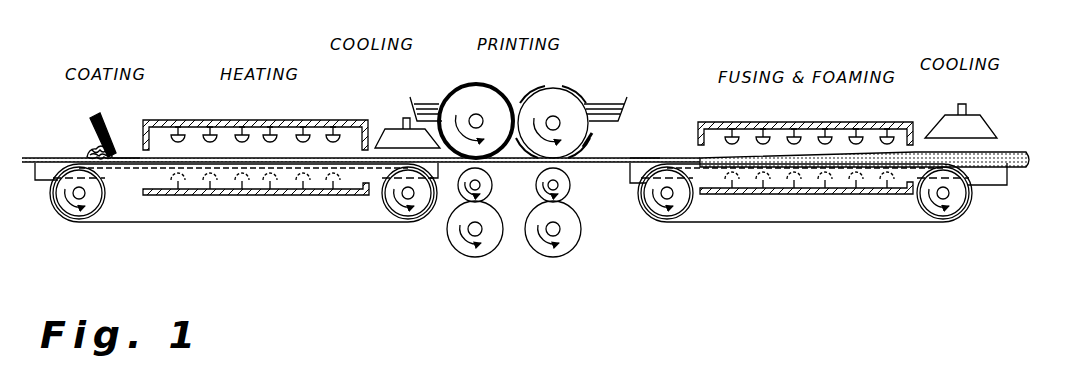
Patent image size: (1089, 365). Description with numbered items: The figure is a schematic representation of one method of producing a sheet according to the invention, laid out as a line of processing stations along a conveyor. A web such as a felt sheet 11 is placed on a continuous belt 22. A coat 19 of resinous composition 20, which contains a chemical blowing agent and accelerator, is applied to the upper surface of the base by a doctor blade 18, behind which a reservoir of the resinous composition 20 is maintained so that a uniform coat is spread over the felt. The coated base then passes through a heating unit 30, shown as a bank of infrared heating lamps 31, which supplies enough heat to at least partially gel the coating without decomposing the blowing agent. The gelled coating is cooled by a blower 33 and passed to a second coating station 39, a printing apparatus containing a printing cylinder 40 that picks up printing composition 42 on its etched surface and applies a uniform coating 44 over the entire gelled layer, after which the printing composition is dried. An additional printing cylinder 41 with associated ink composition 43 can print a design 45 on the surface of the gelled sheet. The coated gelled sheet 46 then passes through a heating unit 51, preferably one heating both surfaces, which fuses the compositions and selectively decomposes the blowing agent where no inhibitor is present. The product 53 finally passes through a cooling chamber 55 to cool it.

The felt sheet 11 is at (25, 157).
The doctor blade 18 is at (99, 115).
The coat 19 is at (121, 156).
The resinous composition 20 is at (90, 152).
The continuous belt 22 is at (258, 222).
The heating unit 30 is at (256, 142).
The infrared heating lamps 31 is at (333, 137).
The blower 33 is at (398, 129).
The second coating station 39 is at (533, 96).
The printing cylinder 40 is at (494, 104).
The additional printing cylinder 41 is at (594, 138).
The printing composition 42 is at (428, 104).
The ink composition 43 is at (622, 100).
The uniform coating 44 is at (508, 170).
The design 45 is at (640, 156).
The coated gelled sheet 46 is at (682, 163).
The heating unit 51 is at (833, 121).
The product 53 is at (1031, 160).
The cooling chamber 55 is at (991, 129).